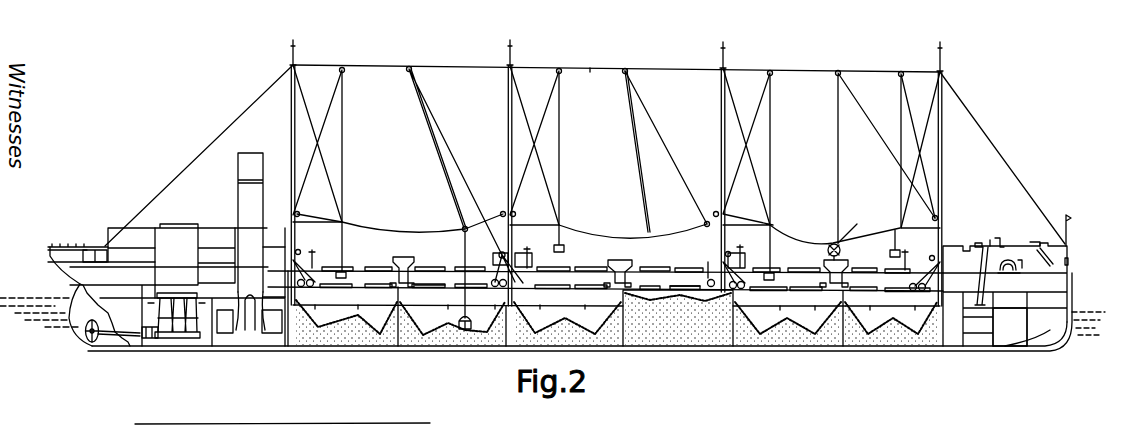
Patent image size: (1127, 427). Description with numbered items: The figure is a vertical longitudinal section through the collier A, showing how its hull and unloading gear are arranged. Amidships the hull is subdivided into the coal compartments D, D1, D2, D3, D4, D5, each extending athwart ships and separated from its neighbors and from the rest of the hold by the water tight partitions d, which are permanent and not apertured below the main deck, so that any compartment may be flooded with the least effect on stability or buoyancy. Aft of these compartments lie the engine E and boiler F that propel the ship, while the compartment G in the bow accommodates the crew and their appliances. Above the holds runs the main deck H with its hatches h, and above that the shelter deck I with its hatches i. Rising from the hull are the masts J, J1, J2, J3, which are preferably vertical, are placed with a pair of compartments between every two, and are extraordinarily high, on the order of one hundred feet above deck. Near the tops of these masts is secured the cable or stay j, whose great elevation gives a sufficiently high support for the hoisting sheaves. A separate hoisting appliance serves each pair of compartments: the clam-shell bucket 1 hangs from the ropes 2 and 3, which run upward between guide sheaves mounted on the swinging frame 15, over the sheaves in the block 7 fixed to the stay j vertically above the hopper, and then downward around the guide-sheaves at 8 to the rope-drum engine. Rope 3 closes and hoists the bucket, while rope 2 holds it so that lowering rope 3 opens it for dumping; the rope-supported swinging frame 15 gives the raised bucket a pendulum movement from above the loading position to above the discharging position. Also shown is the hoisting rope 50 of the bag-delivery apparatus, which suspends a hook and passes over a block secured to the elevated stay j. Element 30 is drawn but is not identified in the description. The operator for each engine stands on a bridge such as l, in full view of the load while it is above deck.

The mast J is at (291, 118).
The mast J1 is at (508, 128).
The mast J2 is at (721, 132).
The mast J3 is at (937, 174).
The block 7 is at (409, 69).
The rope 2 is at (438, 156).
The rope 3 is at (452, 182).
The hoisting rope 50 is at (342, 198).
The cable or stay j is at (590, 70).
The clam-shell bucket 1 is at (459, 323).
The guide-sheaves 8 is at (499, 254).
The main deck H is at (368, 285).
The hatches h is at (432, 285).
The bridge l is at (920, 251).
The shelter deck I is at (600, 268).
The hatches i is at (690, 272).
The hopper with sheave 30 is at (824, 262).
The swinging frame 15 is at (857, 225).
The engine E is at (168, 303).
The boiler F is at (270, 323).
The water tight partitions d is at (290, 347).
The coal compartment D is at (352, 340).
The coal compartment D1 is at (452, 340).
The coal compartment D2 is at (567, 323).
The coal compartment D3 is at (693, 336).
The coal compartment D4 is at (810, 332).
The coal compartment D5 is at (905, 338).
The compartment G is at (1010, 327).
The collier A is at (1050, 343).